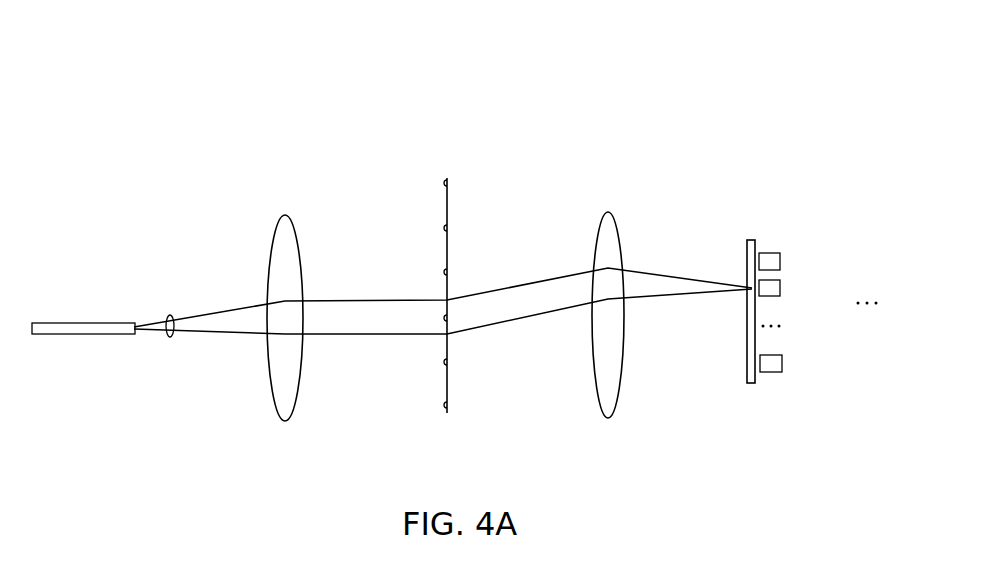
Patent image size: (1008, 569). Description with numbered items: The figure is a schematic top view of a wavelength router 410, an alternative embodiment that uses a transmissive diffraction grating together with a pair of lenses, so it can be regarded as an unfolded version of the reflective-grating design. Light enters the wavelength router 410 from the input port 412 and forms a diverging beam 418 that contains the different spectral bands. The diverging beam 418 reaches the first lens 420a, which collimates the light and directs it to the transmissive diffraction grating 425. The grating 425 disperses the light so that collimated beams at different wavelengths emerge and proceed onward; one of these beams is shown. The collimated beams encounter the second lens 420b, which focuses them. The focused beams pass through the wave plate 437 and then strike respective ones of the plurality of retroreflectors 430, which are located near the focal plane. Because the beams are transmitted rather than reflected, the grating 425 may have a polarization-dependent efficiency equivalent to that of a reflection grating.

The wavelength router 410 is at (147, 122).
The input port 412 is at (65, 335).
The diverging beam 418 is at (168, 338).
The first lens 420a is at (268, 239).
The second lens 420b is at (592, 238).
The transmissive diffraction grating 425 is at (447, 208).
The retroreflectors 430 is at (780, 262).
The wave plate 437 is at (746, 268).